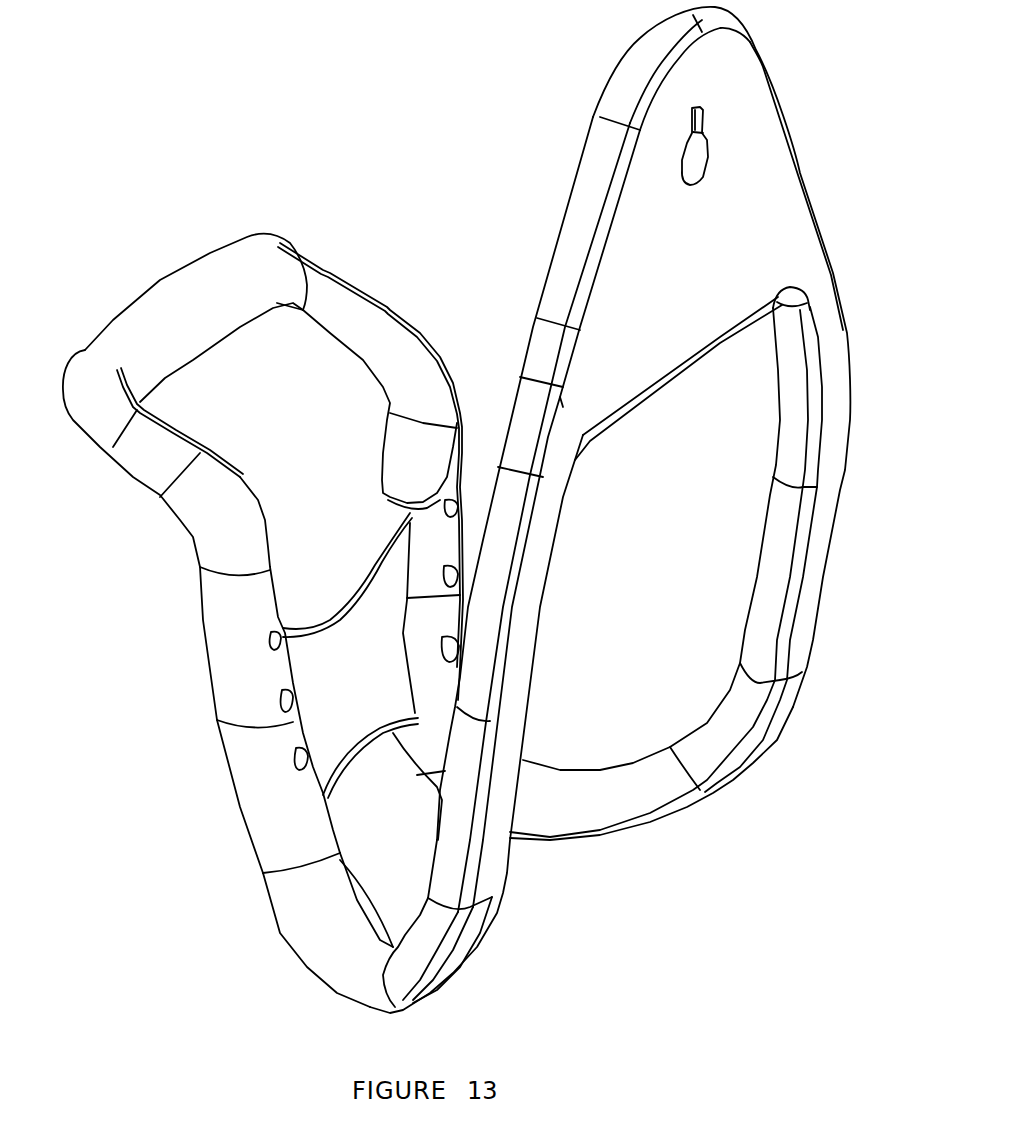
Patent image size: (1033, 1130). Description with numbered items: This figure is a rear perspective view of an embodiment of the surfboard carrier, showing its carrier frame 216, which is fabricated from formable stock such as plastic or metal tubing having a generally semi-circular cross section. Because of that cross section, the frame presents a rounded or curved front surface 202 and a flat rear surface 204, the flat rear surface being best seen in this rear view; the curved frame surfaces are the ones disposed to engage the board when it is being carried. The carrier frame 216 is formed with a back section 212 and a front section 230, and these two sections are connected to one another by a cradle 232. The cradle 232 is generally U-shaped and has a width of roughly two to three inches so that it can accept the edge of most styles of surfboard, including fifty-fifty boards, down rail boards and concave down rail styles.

The front surface 202 is at (442, 840).
The rear surface 204 is at (490, 874).
The back section 212 is at (593, 117).
The carrier frame 216 is at (533, 183).
The front section 230 is at (283, 500).
The cradle 232 is at (394, 885).